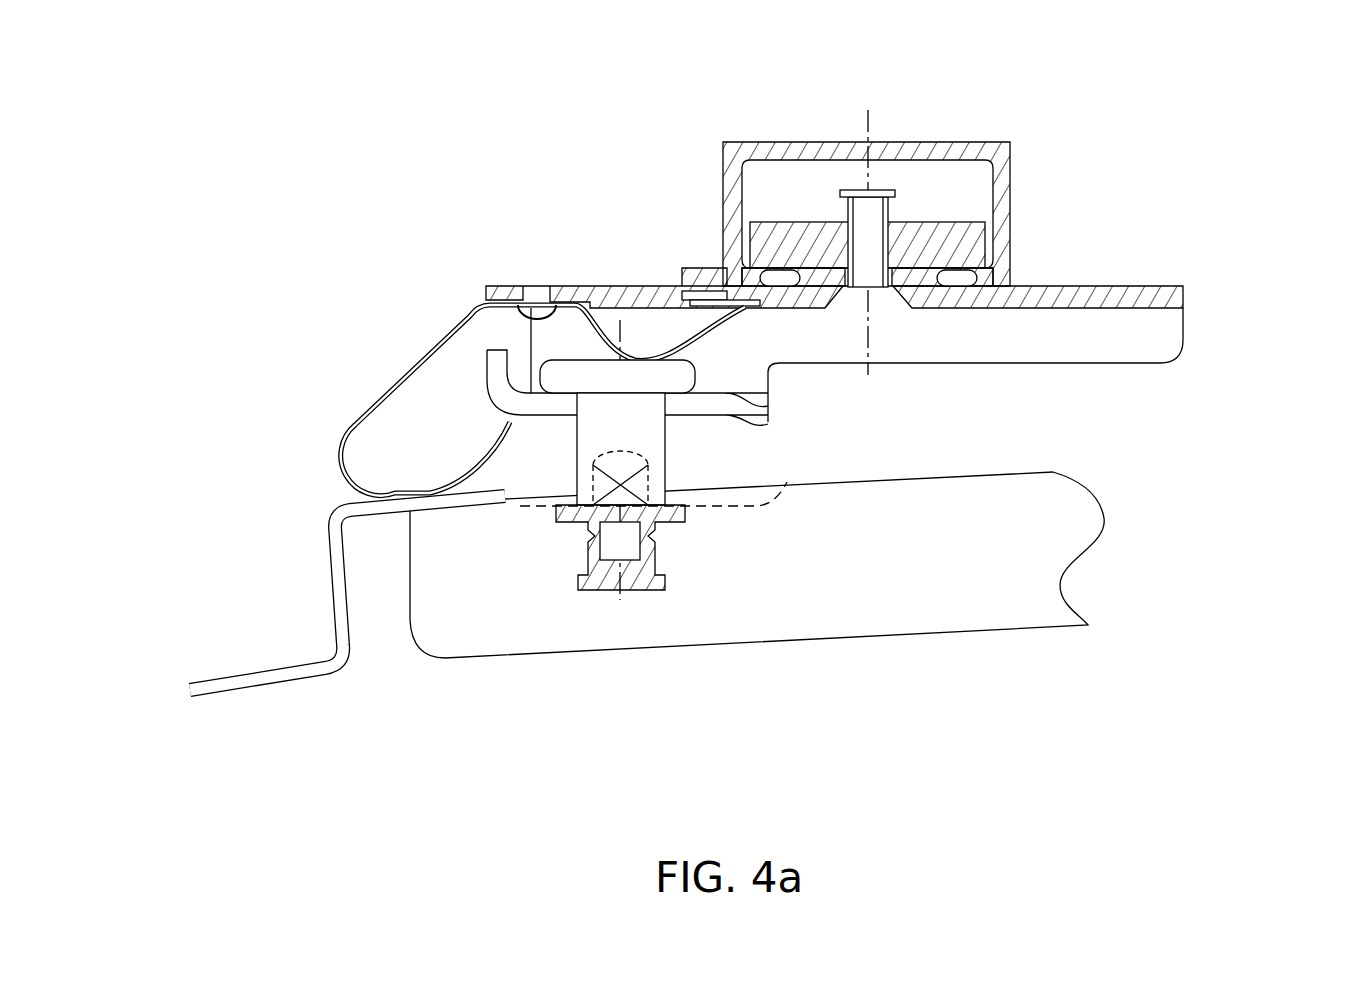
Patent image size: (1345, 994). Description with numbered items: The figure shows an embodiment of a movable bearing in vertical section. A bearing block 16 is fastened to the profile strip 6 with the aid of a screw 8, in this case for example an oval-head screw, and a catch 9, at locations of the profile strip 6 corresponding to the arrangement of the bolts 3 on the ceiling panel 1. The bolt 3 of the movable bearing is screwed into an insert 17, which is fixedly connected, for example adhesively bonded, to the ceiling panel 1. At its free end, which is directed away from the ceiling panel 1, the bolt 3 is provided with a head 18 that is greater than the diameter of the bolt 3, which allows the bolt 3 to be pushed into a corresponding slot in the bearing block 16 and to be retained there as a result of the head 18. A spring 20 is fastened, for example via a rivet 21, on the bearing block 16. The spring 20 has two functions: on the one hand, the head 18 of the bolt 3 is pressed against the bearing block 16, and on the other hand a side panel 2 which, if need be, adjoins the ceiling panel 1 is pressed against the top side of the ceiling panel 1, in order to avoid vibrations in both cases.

The ceiling panel 1 is at (875, 573).
The side panel 2 is at (248, 680).
The bolt 3 is at (592, 434).
The profile strip 6 is at (915, 152).
The screw 8 is at (878, 268).
The catch 9 is at (937, 245).
The bearing block 16 is at (1083, 327).
The insert 17 is at (632, 574).
The head 18 is at (588, 374).
The spring 20 is at (340, 460).
The rivet 21 is at (524, 296).